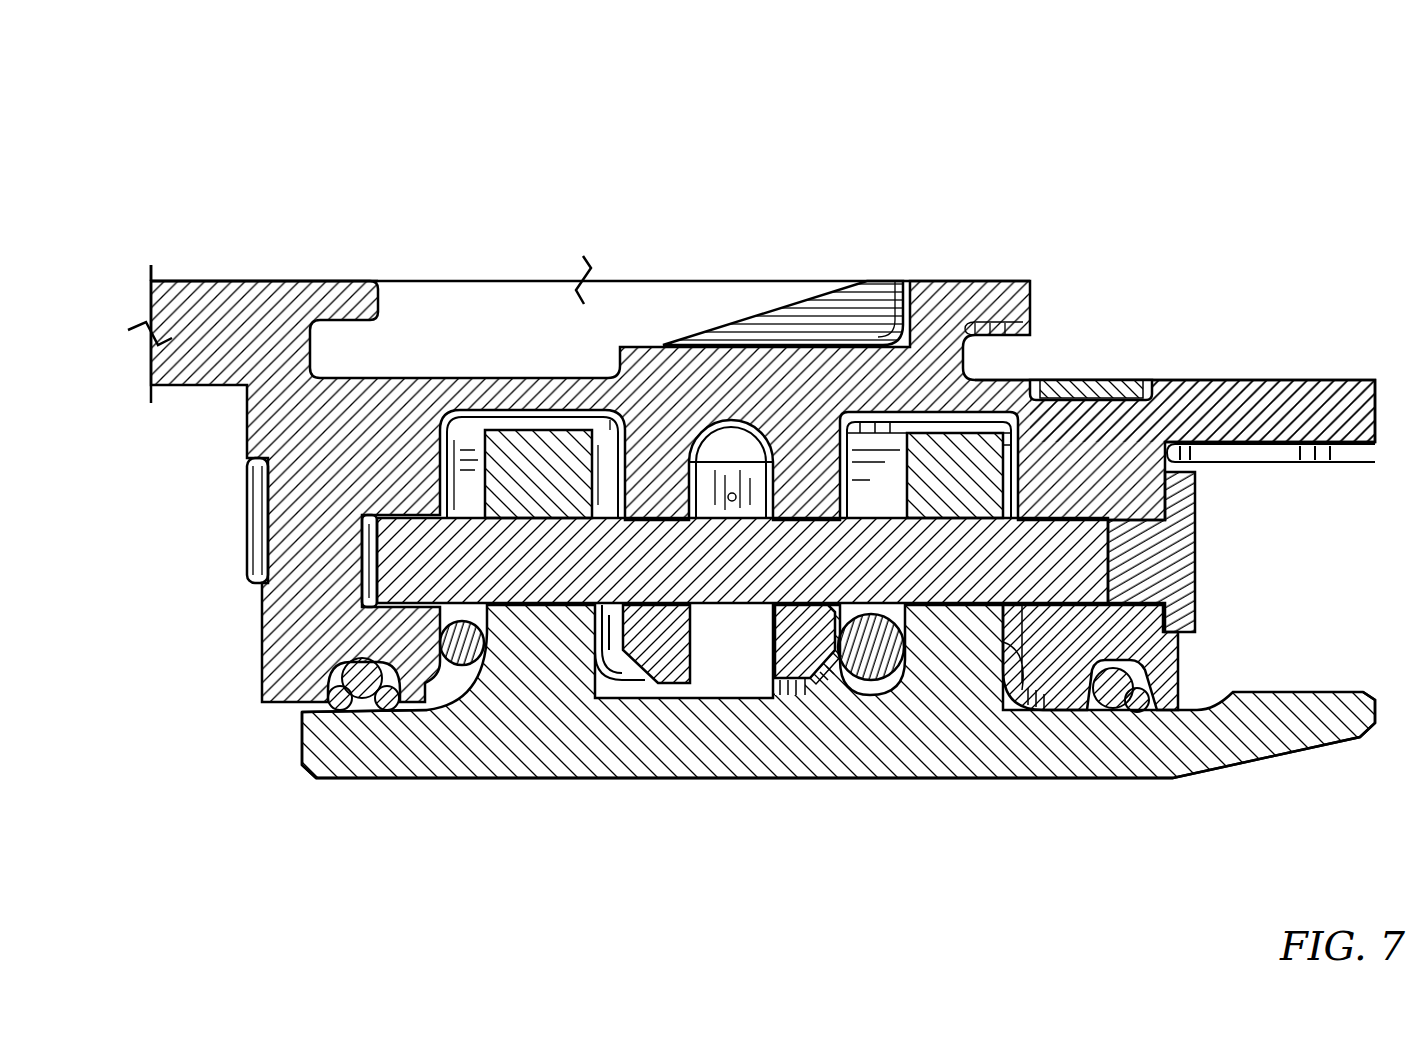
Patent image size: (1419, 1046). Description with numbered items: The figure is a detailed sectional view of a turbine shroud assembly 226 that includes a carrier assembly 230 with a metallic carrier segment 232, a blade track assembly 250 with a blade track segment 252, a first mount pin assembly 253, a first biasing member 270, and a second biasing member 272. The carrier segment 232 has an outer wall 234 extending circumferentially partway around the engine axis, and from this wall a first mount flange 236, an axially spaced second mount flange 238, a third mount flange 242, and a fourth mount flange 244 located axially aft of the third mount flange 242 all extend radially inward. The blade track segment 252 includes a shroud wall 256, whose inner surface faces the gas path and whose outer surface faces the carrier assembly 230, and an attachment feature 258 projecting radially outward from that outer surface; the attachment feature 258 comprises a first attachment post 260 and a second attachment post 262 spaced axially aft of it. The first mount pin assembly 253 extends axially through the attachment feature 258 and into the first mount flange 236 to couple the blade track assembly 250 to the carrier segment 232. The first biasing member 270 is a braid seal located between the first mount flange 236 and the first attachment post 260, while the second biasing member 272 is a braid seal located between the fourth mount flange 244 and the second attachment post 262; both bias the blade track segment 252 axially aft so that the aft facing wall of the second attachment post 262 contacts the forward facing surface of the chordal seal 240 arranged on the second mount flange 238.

The turbine shroud assembly 226 is at (266, 162).
The carrier assembly 230 is at (1282, 357).
The carrier segment 232 is at (653, 347).
The outer wall 234 is at (320, 398).
The first mount flange 236 is at (320, 485).
The second mount flange 238 is at (1143, 471).
The chordal seal 240 is at (1010, 640).
The third mount flange 242 is at (665, 647).
The fourth mount flange 244 is at (807, 645).
The blade track assembly 250 is at (300, 778).
The blade track segment 252 is at (712, 784).
The first mount pin assembly 253 is at (427, 566).
The shroud wall 256 is at (398, 745).
The attachment feature 258 is at (542, 690).
The first attachment post 260 is at (960, 470).
The second attachment post 262 is at (531, 447).
The first biasing member 270 is at (873, 652).
The second biasing member 272 is at (462, 645).